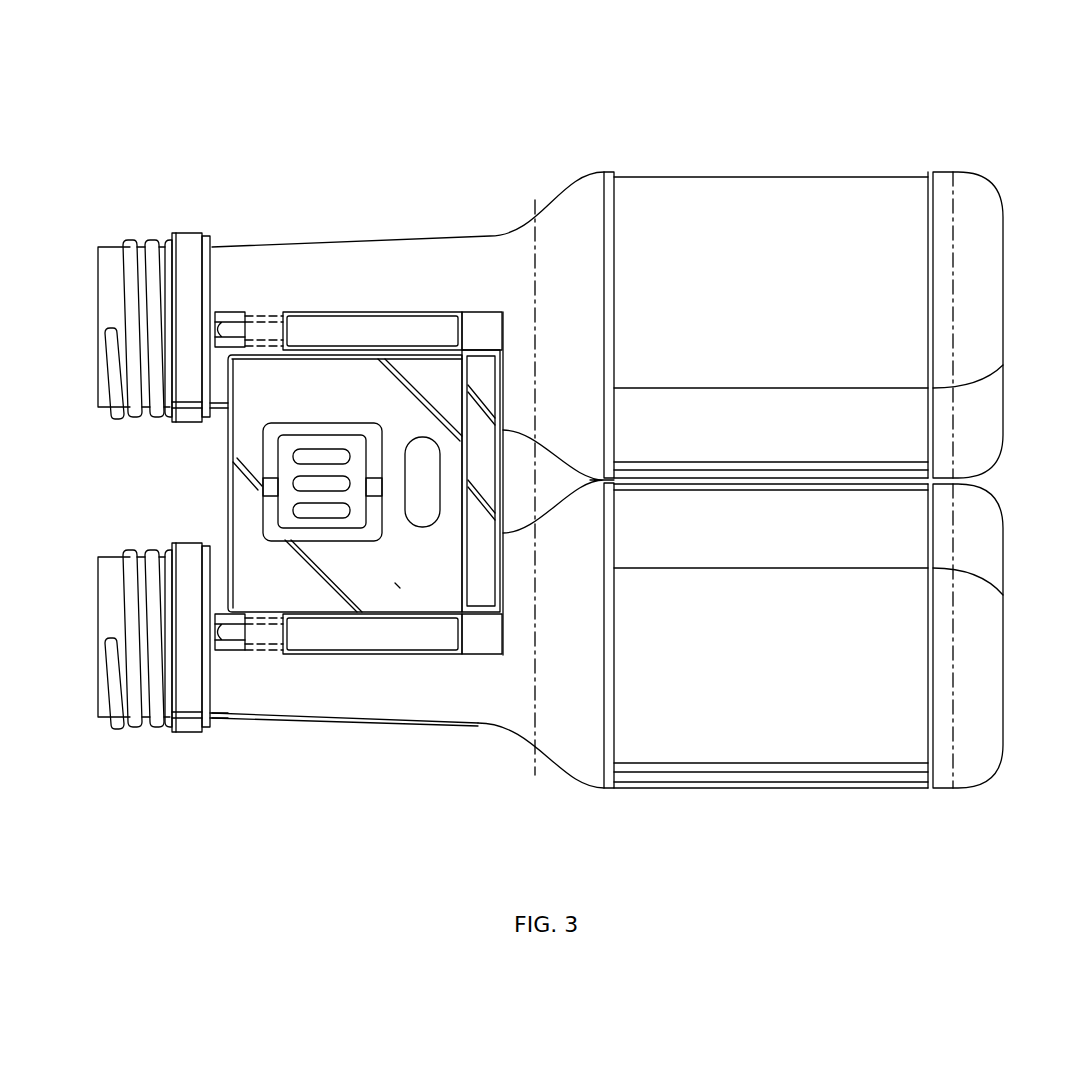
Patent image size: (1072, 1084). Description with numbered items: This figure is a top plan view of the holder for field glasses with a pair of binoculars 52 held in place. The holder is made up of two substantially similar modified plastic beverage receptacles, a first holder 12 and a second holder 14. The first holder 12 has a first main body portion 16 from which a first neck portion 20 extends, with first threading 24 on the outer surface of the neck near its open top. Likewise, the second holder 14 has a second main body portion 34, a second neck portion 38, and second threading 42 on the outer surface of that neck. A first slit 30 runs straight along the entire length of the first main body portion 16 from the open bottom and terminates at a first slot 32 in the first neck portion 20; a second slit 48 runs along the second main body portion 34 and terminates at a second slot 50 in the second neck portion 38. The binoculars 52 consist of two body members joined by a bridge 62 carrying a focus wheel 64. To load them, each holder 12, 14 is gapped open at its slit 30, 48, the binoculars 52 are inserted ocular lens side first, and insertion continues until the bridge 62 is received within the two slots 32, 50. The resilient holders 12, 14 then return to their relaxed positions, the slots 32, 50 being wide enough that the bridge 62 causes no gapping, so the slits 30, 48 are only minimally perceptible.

The first holder 12 is at (748, 802).
The second holder 14 is at (746, 160).
The first main body portion 16 is at (822, 742).
The first neck portion 20 is at (263, 705).
The first threading 24 is at (118, 727).
The first slit 30 is at (793, 572).
The first slot 32 is at (322, 660).
The second main body portion 34 is at (815, 205).
The second neck portion 38 is at (402, 255).
The second threading 42 is at (130, 240).
The second slit 48 is at (900, 388).
The second slot 50 is at (326, 308).
The binoculars 52 is at (204, 511).
The bridge 62 is at (397, 583).
The focus wheel 64 is at (333, 448).